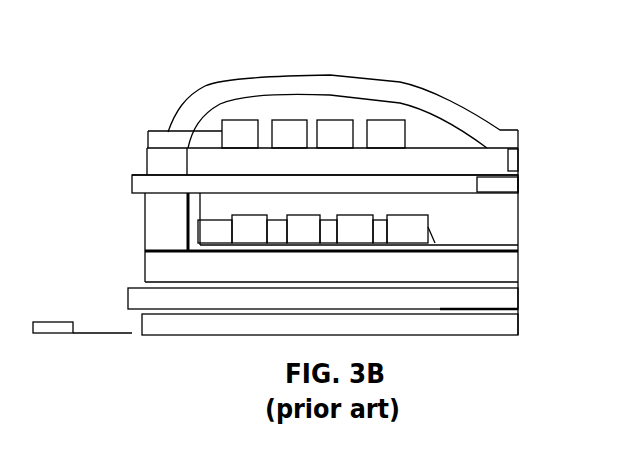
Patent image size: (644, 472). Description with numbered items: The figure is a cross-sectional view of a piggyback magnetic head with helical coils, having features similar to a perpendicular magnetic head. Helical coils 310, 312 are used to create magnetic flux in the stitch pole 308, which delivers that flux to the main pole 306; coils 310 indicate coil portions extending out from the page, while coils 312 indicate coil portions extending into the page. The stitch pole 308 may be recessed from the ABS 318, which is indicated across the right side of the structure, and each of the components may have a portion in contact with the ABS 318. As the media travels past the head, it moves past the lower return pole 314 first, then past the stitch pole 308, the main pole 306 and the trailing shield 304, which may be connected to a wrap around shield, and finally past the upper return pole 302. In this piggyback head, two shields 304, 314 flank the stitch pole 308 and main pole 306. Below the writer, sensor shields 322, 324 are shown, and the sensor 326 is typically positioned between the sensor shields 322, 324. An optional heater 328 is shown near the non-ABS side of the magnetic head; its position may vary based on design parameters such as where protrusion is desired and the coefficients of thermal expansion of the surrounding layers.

The upper return pole 302 is at (457, 102).
The trailing shield 304 is at (519, 160).
The main pole 306 is at (520, 186).
The stitch pole 308 is at (472, 193).
The helical coils 310 is at (168, 131).
The helical coils 312 is at (232, 213).
The lower return pole 314 is at (365, 276).
The ABS 318 is at (520, 257).
The sensor shield 322 is at (128, 292).
The sensor shield 324 is at (142, 321).
The sensor 326 is at (510, 309).
The heater 328 is at (62, 322).